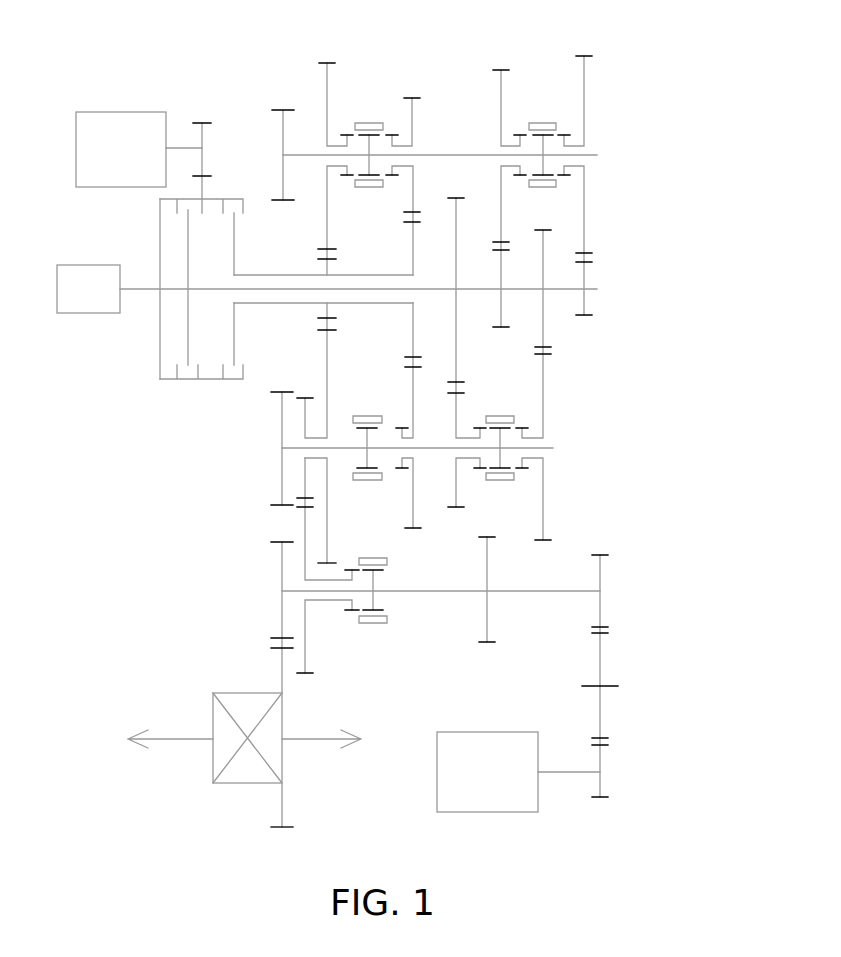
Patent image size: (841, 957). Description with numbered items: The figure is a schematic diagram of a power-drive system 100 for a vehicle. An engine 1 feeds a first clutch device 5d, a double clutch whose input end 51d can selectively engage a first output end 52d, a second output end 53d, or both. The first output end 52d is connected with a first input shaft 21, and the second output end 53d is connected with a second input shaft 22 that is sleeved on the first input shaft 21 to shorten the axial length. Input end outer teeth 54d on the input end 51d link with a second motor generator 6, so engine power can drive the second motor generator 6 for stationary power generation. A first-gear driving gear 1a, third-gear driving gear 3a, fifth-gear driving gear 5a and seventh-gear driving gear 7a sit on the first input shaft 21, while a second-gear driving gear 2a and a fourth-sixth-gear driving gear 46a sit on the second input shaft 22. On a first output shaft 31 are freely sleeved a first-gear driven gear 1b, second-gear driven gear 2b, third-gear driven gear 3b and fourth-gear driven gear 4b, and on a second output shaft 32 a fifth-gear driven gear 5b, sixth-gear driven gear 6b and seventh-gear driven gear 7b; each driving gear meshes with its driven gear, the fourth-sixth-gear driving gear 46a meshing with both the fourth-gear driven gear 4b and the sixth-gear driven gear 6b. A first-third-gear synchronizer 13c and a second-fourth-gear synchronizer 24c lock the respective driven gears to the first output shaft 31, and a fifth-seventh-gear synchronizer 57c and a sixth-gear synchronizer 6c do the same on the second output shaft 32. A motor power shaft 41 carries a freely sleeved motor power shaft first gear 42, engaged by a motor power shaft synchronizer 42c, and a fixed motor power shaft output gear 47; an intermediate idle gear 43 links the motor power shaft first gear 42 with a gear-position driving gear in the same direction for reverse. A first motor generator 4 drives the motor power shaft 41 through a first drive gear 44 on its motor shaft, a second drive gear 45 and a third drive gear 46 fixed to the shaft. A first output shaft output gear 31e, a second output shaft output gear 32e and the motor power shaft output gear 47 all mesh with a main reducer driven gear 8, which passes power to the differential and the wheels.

The power-drive system 100 is at (732, 108).
The engine 1 is at (96, 300).
The second motor generator 6 is at (108, 147).
The first motor generator 4 is at (473, 792).
The main reducer driven gear 8 is at (281, 677).
The first input shaft 21 is at (597, 289).
The second input shaft 22 is at (298, 303).
The first output shaft 31 is at (597, 155).
The second output shaft 32 is at (553, 448).
The motor power shaft 41 is at (557, 591).
The first clutch device 5d is at (83, 357).
The input end 51d is at (160, 353).
The first output end 52d is at (188, 355).
The second output end 53d is at (234, 358).
The input end outer teeth 54d is at (203, 123).
The first output shaft output gear 31e is at (281, 110).
The second output shaft output gear 32e is at (282, 423).
The first-gear driving gear 1a is at (583, 305).
The first-gear driven gear 1b is at (584, 100).
The second-gear driving gear 2a is at (328, 305).
The second-gear driven gear 2b is at (325, 63).
The third-gear driving gear 3a is at (501, 315).
The third-gear driven gear 3b is at (501, 70).
The fourth-gear driven gear 4b is at (412, 98).
The fifth-gear driving gear 5a is at (542, 327).
The fifth-gear driven gear 5b is at (545, 480).
The sixth-gear driven gear 6b is at (413, 487).
The sixth-gear synchronizer 6c is at (367, 415).
The seventh-gear driving gear 7a is at (457, 337).
The seventh-gear driven gear 7b is at (457, 495).
The first-third-gear synchronizer 13c is at (540, 123).
The second-fourth-gear synchronizer 24c is at (390, 80).
The fifth-seventh-gear synchronizer 57c is at (507, 480).
The motor power shaft synchronizer 42c is at (382, 617).
The motor power shaft first gear 42 is at (305, 640).
The intermediate idle gear 43 is at (327, 495).
The first drive gear 44 is at (600, 785).
The second drive gear 45 is at (600, 705).
The third drive gear 46 is at (600, 610).
The fourth-sixth-gear driving gear 46a is at (412, 248).
The motor power shaft output gear 47 is at (282, 610).